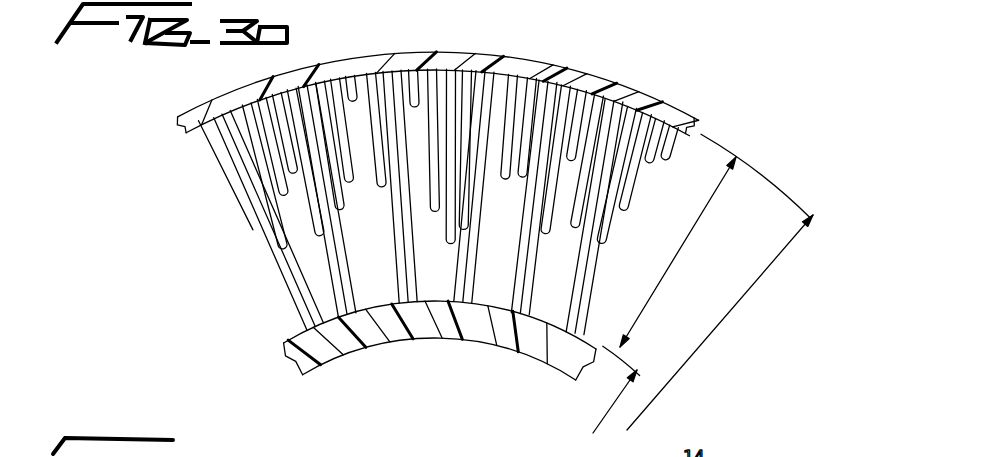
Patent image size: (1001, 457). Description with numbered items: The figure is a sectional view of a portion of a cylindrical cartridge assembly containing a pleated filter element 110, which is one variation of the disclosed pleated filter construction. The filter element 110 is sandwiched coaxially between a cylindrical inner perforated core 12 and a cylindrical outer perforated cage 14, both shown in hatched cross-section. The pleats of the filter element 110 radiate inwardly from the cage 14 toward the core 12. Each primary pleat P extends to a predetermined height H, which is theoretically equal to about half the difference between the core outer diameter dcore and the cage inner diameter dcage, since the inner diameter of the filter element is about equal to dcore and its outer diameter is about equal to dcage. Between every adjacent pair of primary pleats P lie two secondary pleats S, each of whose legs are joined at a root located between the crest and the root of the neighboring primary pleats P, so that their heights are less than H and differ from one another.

The outer perforated cage 14 is at (597, 73).
The inner perforated core 12 is at (412, 333).
The filter element 110 is at (233, 233).
The secondary pleat S is at (483, 200).
The primary pleat P is at (318, 285).
The predetermined height H is at (661, 291).
The cage inner diameter dcage is at (746, 292).
The core outer diameter dcore is at (601, 422).